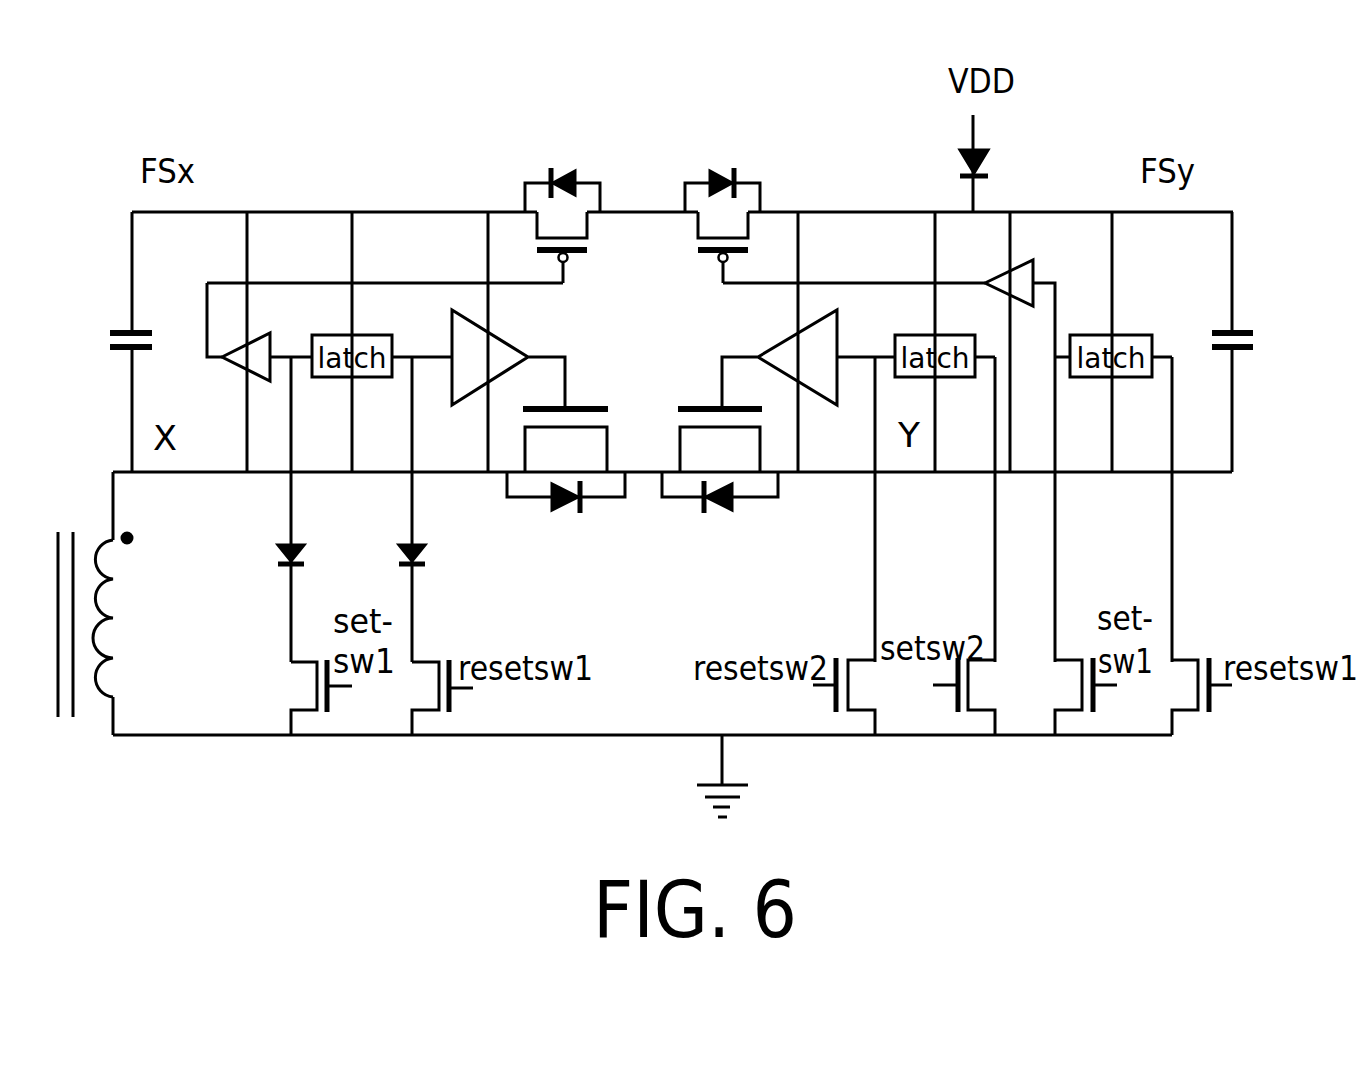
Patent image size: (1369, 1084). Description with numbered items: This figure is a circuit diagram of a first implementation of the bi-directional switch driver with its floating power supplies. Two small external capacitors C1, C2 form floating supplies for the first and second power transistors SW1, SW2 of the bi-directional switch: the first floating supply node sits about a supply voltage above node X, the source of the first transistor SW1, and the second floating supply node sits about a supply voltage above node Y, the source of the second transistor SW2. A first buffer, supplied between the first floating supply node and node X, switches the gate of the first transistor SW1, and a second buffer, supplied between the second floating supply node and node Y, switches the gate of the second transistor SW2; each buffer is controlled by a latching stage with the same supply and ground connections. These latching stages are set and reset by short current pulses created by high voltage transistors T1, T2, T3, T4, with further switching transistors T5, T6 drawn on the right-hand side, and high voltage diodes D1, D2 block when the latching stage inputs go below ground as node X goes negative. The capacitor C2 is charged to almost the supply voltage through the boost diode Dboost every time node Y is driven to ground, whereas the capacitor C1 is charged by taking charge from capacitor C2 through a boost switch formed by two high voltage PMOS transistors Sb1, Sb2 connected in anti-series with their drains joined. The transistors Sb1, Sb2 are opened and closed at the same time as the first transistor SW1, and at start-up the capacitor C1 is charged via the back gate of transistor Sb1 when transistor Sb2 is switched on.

The floating supply capacitor C1 is at (150, 342).
The floating supply capacitor C2 is at (1252, 342).
The PMOS transistor Sb1 is at (562, 200).
The PMOS transistor Sb2 is at (722, 200).
The boost diode Dboost is at (911, 163).
The first transistor SW1 is at (566, 489).
The second transistor SW2 is at (720, 489).
The high voltage diode D1 is at (315, 556).
The high voltage diode D2 is at (436, 556).
The high voltage transistor T1 is at (307, 697).
The high voltage transistor T2 is at (435, 697).
The high voltage transistor T3 is at (853, 696).
The high voltage transistor T4 is at (975, 696).
The transistor T5 is at (1074, 696).
The transistor T6 is at (1195, 696).